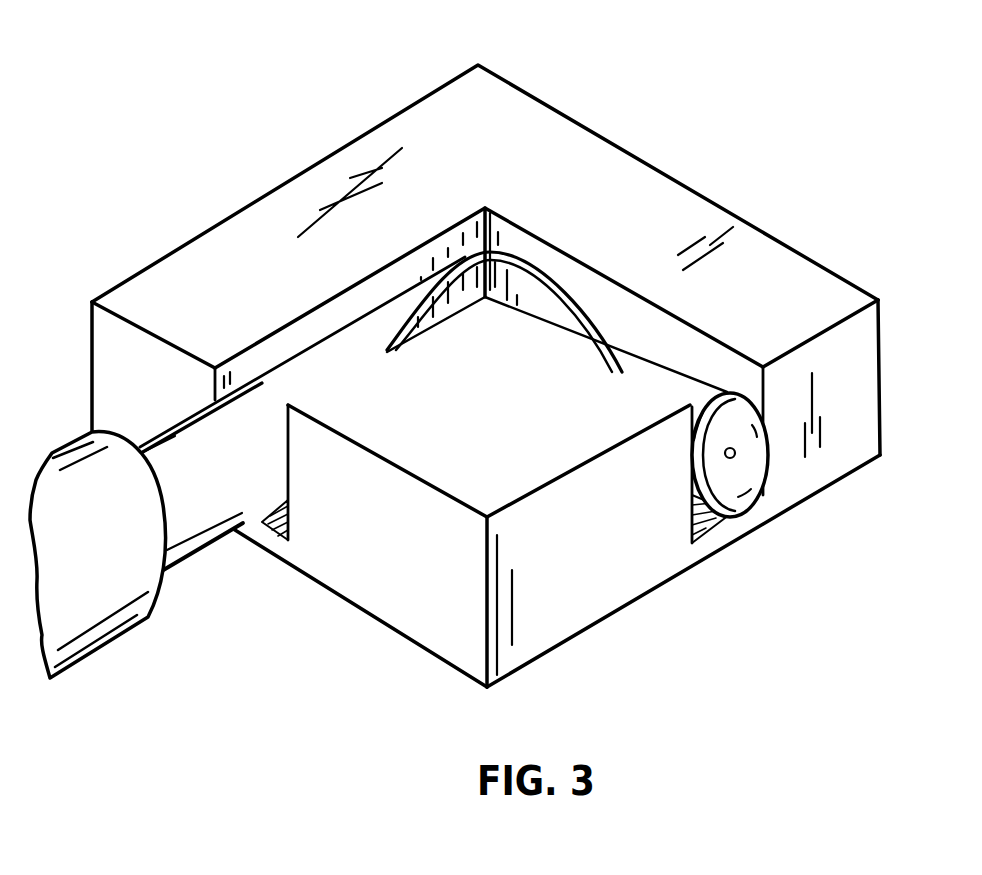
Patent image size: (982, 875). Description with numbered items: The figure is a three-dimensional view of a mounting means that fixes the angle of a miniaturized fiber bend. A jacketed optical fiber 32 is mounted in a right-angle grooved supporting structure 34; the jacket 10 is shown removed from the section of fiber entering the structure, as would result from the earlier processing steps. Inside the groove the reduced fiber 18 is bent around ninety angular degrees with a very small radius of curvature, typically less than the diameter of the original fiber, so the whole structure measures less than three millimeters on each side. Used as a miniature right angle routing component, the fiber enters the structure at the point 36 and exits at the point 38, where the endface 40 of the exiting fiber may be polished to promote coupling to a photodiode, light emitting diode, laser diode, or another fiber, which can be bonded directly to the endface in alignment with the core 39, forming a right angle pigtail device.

The jacket 10 is at (108, 638).
The reduced fiber 18 is at (468, 258).
The jacketed optical fiber 32 is at (208, 505).
The right-angle grooved supporting structure 34 is at (162, 270).
The entry point 36 is at (265, 525).
The exit point 38 is at (735, 508).
The core 39 is at (737, 458).
The endface 40 is at (755, 455).